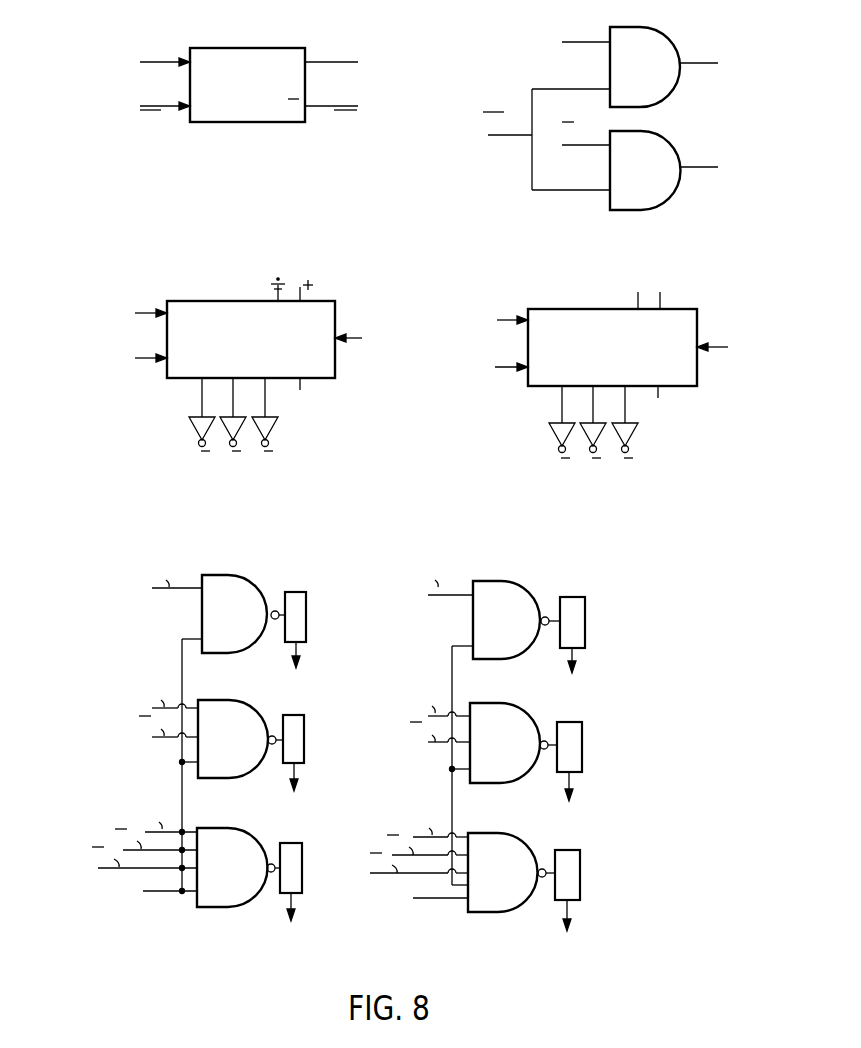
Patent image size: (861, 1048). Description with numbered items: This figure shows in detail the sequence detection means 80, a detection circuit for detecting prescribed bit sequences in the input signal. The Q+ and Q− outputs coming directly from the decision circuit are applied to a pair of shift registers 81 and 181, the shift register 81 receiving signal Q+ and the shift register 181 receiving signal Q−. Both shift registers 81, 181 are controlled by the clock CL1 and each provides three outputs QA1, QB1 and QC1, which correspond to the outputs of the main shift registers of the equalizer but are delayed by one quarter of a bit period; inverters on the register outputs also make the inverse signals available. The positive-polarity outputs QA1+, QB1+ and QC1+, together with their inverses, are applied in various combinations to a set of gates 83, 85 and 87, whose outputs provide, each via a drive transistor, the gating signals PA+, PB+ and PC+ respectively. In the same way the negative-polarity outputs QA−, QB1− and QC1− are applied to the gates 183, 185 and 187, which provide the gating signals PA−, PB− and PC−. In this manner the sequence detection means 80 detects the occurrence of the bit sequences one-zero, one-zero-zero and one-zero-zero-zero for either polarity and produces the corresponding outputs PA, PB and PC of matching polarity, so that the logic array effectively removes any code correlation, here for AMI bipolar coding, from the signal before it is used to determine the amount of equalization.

The sequence detection means 80 is at (657, 597).
The shift register 81 is at (187, 277).
The shift register 181 is at (549, 308).
The gate 83 is at (240, 627).
The gate 85 is at (239, 753).
The gate 87 is at (238, 882).
The gate 183 is at (513, 633).
The gate 185 is at (510, 758).
The gate 187 is at (508, 888).